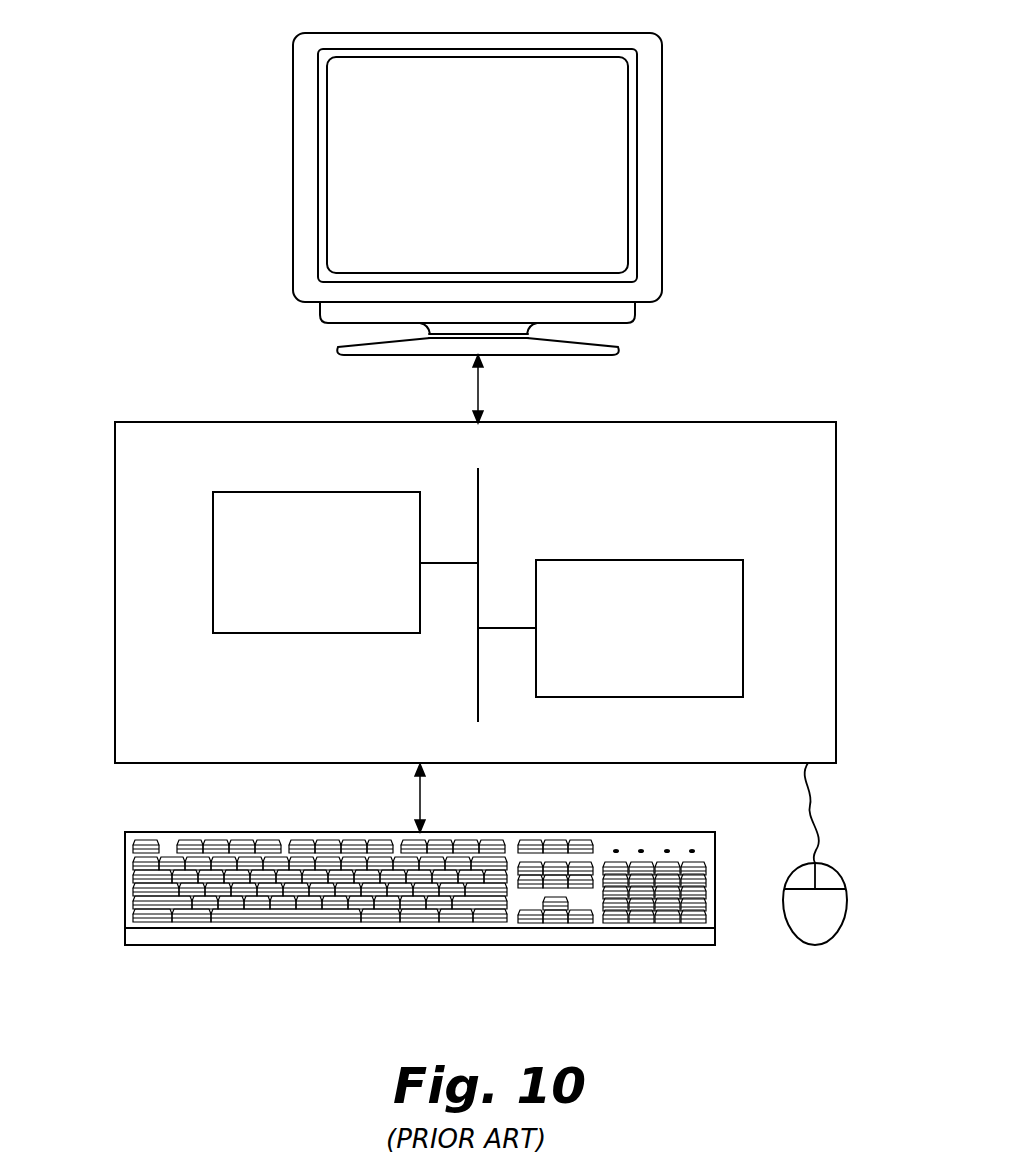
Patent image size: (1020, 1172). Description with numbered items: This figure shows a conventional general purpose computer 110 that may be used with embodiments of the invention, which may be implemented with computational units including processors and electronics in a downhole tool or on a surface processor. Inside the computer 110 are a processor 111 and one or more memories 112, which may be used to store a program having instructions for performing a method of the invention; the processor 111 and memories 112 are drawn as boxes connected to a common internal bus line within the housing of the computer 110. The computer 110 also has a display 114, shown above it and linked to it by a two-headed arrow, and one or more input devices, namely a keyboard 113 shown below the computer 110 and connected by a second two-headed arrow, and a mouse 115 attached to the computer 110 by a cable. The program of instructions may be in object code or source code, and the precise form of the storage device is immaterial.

The general purpose computer 110 is at (483, 577).
The processor 111 is at (663, 558).
The memory 112 is at (300, 634).
The keyboard 113 is at (125, 881).
The display 114 is at (663, 154).
The mouse 115 is at (847, 903).